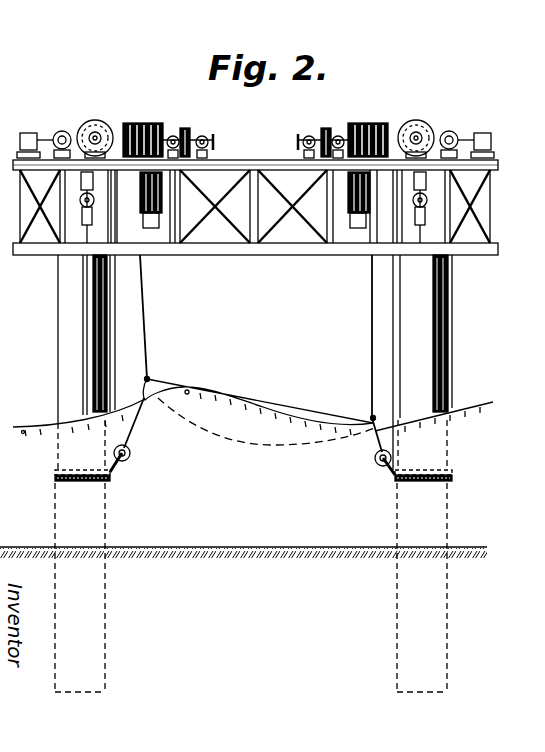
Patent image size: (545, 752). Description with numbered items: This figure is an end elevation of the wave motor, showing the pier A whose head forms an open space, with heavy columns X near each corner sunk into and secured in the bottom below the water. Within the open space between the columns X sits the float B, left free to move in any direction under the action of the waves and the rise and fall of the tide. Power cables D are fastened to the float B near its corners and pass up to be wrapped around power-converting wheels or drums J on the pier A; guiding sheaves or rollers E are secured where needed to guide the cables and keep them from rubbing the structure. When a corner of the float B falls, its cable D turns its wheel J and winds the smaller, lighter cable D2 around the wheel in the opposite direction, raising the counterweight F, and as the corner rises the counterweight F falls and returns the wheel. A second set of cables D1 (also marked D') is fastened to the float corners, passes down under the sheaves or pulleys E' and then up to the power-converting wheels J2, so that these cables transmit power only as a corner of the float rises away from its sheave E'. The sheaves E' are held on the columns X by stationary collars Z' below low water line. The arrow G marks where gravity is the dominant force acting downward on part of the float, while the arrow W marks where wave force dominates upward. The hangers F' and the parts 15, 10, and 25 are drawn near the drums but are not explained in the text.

The pier A is at (252, 160).
The guiding sheaves or rollers E is at (255, 165).
The columns X is at (253, 473).
The stationary collars Z' is at (256, 471).
The wave force arrow W is at (172, 417).
The float B is at (259, 401).
The gravity arrow G is at (333, 401).
The power cables D is at (256, 336).
The power cables D' is at (253, 431).
The sheaves or pulleys E' is at (252, 469).
The smaller cable D2 is at (81, 191).
The power cables D1 is at (414, 199).
The sheave hanger F' is at (245, 234).
The counterweight F is at (255, 200).
The power-converting wheel or drum J is at (146, 123).
The power-converting wheels J2 is at (428, 120).
The gear wheel 15 is at (255, 138).
The gear wheel 10 is at (256, 138).
The motor 25 is at (255, 144).